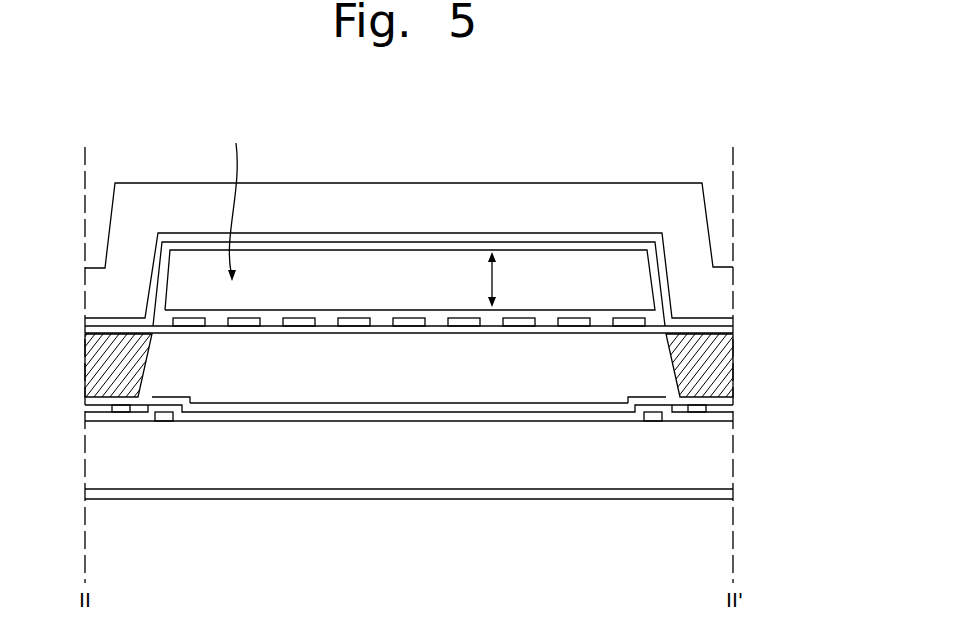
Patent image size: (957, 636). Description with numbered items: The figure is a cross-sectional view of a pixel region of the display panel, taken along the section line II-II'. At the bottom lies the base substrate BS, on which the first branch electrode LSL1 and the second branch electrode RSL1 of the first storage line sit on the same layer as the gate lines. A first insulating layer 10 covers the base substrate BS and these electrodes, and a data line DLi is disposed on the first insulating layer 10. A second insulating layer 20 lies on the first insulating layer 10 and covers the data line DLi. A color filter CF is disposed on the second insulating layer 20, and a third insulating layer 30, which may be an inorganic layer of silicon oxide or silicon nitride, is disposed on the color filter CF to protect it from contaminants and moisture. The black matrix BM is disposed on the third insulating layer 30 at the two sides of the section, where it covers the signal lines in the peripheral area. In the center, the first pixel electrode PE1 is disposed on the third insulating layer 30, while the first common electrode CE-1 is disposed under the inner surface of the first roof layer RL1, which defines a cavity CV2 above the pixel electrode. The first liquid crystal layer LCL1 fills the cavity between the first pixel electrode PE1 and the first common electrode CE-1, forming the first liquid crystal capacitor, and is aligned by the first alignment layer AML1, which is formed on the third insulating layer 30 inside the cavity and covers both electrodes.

The first roof layer RL1 is at (727, 287).
The color filter CF is at (727, 323).
The first alignment layer AML1 is at (397, 243).
The first liquid crystal layer LCL1 is at (515, 279).
The second cavity CV2 is at (233, 200).
The first pixel electrode PE1 is at (299, 318).
The third insulating layer 30 is at (727, 332).
The black matrix BM is at (727, 368).
The first common electrode CE-1 is at (412, 375).
The second insulating layer 20 is at (727, 405).
The first insulating layer 10 is at (727, 419).
The base substrate BS is at (727, 455).
The data line DLi is at (121, 412).
The first branch electrode LSL1 is at (164, 421).
The second branch electrode RSL1 is at (652, 421).